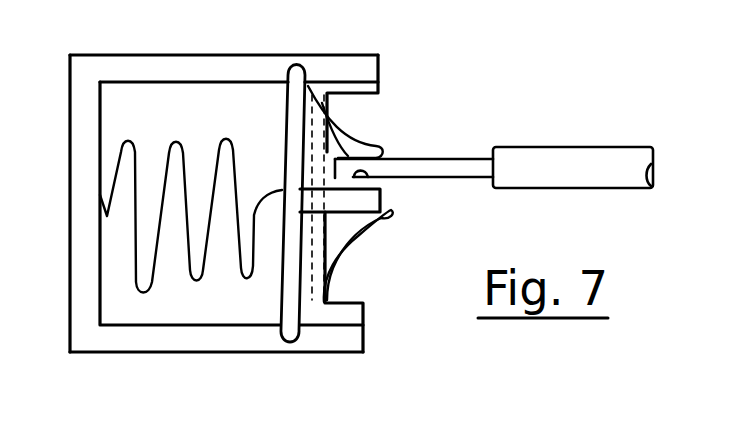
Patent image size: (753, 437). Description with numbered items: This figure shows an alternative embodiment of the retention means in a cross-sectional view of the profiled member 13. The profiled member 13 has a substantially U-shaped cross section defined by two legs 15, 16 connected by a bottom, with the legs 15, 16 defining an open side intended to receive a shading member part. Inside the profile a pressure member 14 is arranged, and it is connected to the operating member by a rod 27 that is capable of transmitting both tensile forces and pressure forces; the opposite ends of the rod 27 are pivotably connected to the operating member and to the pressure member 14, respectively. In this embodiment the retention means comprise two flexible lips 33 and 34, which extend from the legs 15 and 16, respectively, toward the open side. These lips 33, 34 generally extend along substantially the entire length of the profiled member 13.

The profiled member 13 is at (133, 356).
The pressure member 14 is at (286, 277).
The leg 15 is at (341, 66).
The leg 16 is at (330, 338).
The rod 27 is at (489, 149).
The flexible lip 33 is at (352, 143).
The flexible lip 34 is at (348, 242).